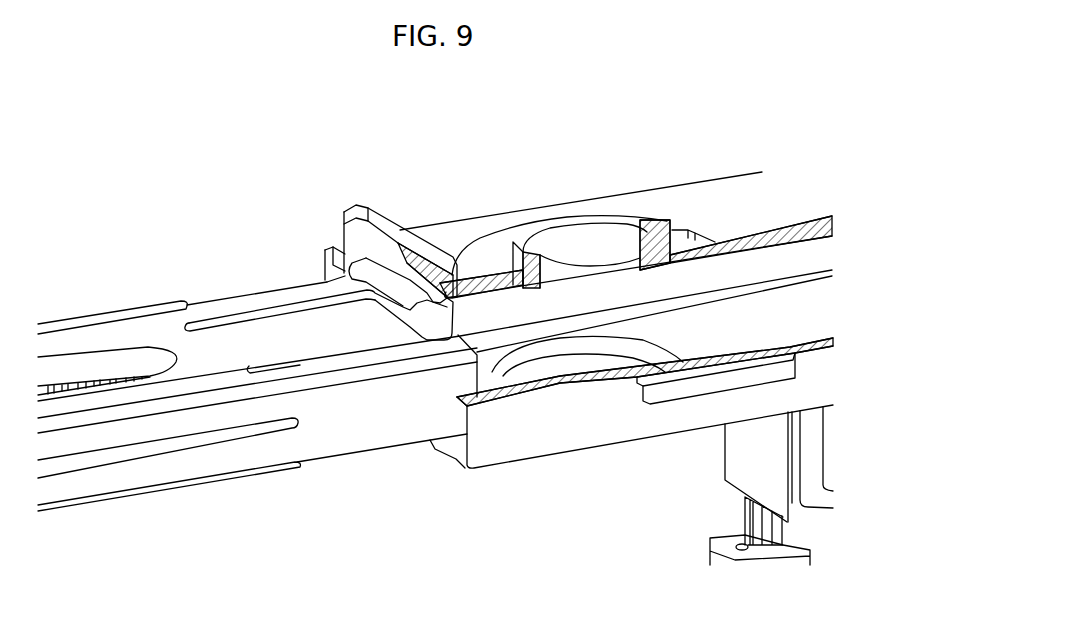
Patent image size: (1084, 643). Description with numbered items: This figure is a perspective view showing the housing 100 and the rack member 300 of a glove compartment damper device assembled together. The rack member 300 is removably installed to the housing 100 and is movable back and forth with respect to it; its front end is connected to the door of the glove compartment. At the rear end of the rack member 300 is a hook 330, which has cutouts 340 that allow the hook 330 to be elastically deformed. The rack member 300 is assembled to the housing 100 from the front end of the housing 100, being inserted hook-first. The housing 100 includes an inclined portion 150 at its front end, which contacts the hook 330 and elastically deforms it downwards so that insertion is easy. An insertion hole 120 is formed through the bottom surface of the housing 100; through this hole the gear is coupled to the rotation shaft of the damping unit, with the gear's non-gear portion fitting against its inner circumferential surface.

The housing 100 is at (723, 203).
The insertion hole 120 is at (567, 368).
The inclined portion 150 is at (372, 214).
The rack member 300 is at (168, 465).
The hook 330 is at (343, 238).
The cutouts 340 is at (320, 358).